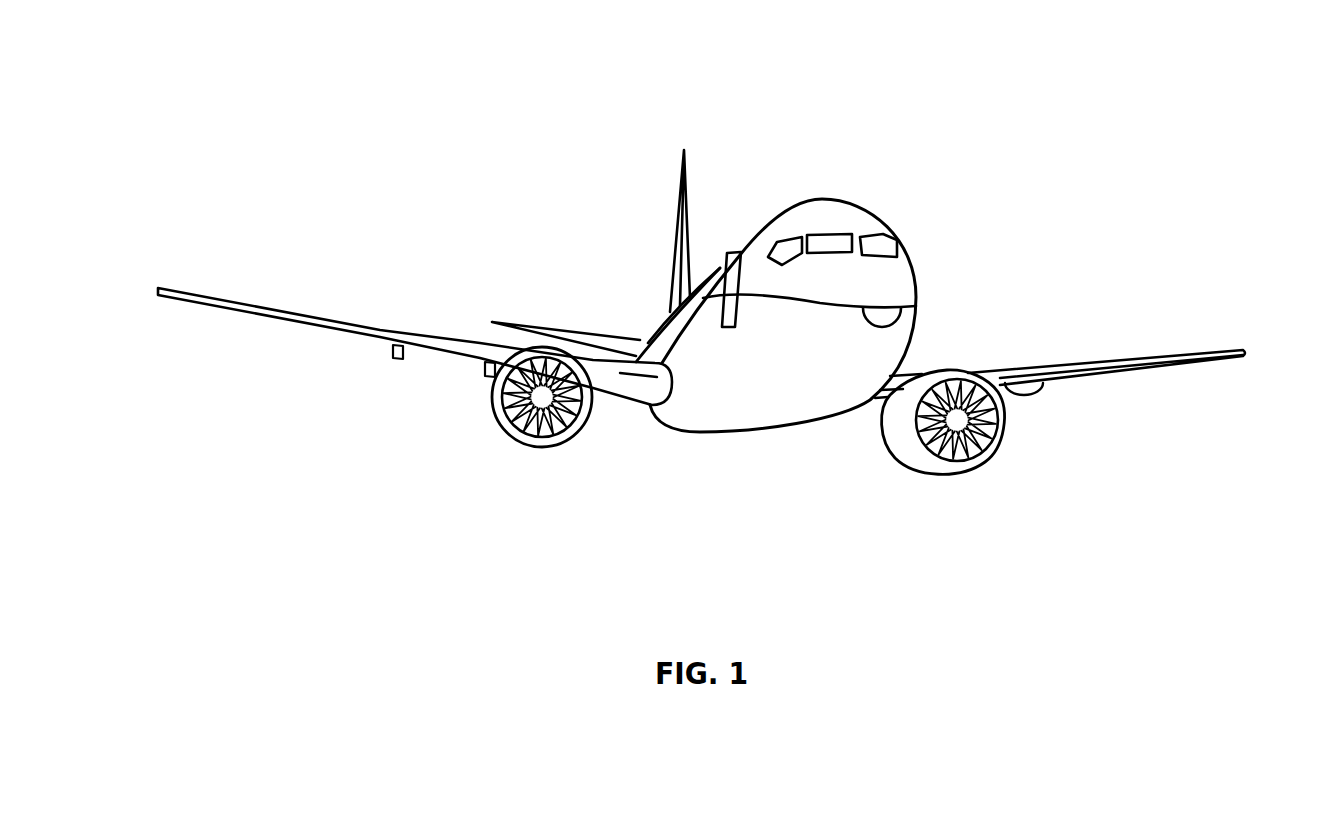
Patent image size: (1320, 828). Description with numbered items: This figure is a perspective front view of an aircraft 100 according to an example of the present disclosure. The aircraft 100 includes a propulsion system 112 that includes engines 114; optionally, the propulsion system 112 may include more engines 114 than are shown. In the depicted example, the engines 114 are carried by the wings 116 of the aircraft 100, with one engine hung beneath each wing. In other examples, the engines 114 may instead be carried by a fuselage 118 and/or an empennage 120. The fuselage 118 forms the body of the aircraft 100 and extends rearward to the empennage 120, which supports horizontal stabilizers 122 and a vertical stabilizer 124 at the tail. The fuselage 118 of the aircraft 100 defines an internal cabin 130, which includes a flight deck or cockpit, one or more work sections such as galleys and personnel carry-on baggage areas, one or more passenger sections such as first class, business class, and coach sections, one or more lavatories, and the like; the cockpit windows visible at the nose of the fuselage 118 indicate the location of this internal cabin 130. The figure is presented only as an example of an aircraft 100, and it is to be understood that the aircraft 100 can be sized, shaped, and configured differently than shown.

The aircraft 100 is at (434, 96).
The propulsion system 112 is at (1044, 458).
The engines 114 is at (537, 447).
The wings 116 is at (303, 312).
The fuselage 118 is at (913, 270).
The empennage 120 is at (668, 303).
The horizontal stabilizers 122 is at (532, 326).
The vertical stabilizer 124 is at (678, 192).
The internal cabin 130 is at (877, 249).